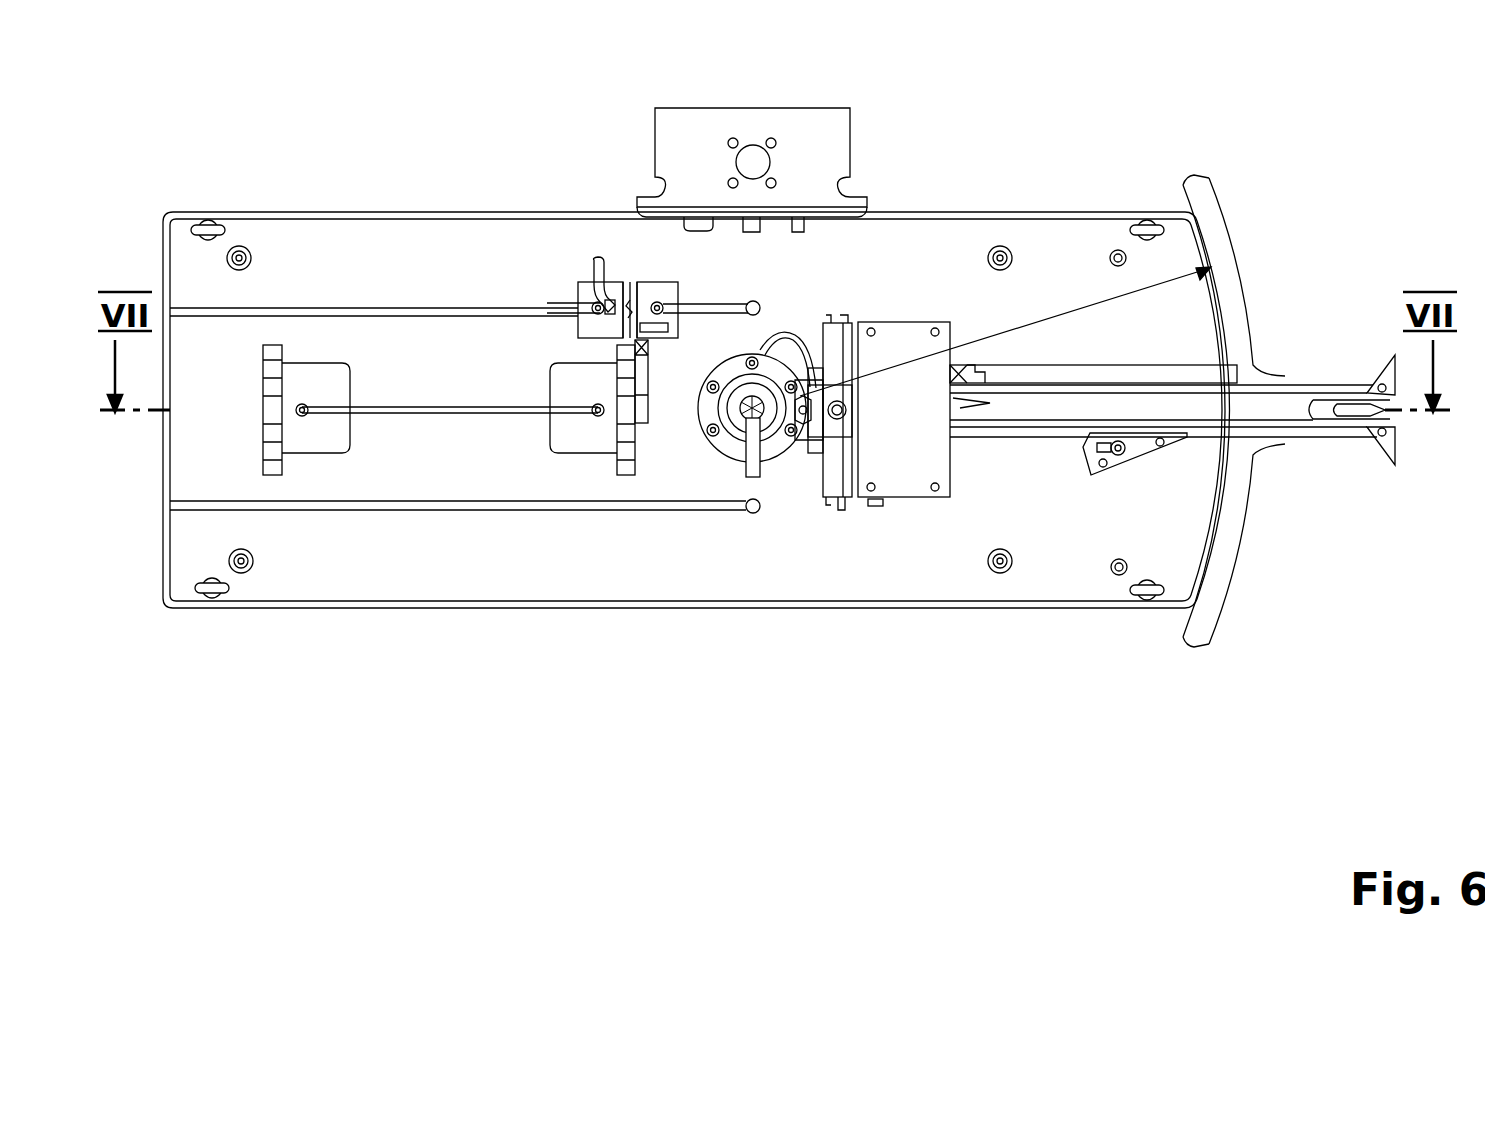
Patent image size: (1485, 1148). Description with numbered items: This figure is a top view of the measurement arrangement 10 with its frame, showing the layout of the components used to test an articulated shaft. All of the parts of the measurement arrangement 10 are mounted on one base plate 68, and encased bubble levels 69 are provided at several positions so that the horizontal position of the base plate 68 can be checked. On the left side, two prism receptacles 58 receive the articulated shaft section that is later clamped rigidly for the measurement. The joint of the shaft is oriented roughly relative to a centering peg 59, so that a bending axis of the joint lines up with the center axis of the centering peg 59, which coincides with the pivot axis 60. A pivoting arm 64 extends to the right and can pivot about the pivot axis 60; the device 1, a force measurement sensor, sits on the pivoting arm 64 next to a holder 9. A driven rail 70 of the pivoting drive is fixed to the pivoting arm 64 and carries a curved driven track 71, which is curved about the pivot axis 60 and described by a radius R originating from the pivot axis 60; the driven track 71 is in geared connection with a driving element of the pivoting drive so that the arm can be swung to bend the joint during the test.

The device 1 is at (893, 340).
The holder bracket 9 is at (840, 322).
The measurement arrangement 10 is at (1055, 258).
The prism receptacles 58 is at (282, 355).
The centering peg 59 is at (742, 428).
The pivot axis 60 is at (762, 372).
The pivoting arm 64 is at (1300, 387).
The base plate 68 is at (875, 586).
The encased bubble levels 69 is at (208, 222).
The driven rail 70 is at (1225, 560).
The driven track 71 is at (1226, 518).
The radius R is at (1000, 338).